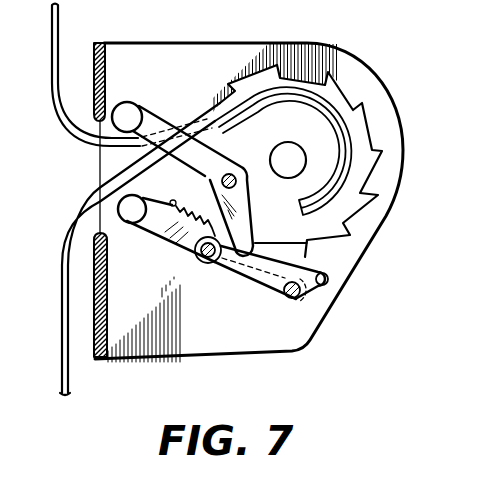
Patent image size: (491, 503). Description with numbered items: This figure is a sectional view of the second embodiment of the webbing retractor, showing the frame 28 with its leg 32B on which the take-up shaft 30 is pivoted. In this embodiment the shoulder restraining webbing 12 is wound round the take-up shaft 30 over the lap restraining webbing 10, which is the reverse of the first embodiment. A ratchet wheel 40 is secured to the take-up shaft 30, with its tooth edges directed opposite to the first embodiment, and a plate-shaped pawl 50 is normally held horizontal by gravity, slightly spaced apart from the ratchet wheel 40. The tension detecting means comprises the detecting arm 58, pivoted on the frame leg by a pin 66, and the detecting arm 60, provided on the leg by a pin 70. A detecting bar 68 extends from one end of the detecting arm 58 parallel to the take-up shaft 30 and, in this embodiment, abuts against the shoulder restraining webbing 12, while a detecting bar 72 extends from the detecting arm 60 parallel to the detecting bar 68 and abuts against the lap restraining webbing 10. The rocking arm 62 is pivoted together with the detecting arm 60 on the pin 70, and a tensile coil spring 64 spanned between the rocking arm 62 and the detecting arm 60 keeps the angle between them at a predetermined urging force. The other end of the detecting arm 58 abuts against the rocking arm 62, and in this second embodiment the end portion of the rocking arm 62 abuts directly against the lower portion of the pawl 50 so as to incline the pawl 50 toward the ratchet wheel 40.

The lap restraining webbing 10 is at (72, 378).
The shoulder restraining webbing 12 is at (58, 20).
The frame 28 is at (94, 82).
The take-up shaft 30 is at (284, 125).
The leg 32B is at (401, 138).
The ratchet wheel 40 is at (305, 258).
The pawl 50 is at (296, 297).
The detecting arm 58 is at (213, 156).
The detecting arm 60 is at (163, 247).
The rocking arm 62 is at (244, 282).
The tensile coil spring 64 is at (187, 206).
The pin 66 is at (238, 183).
The detecting bar 68 is at (122, 103).
The pin 70 is at (205, 263).
The detecting bar 72 is at (122, 225).